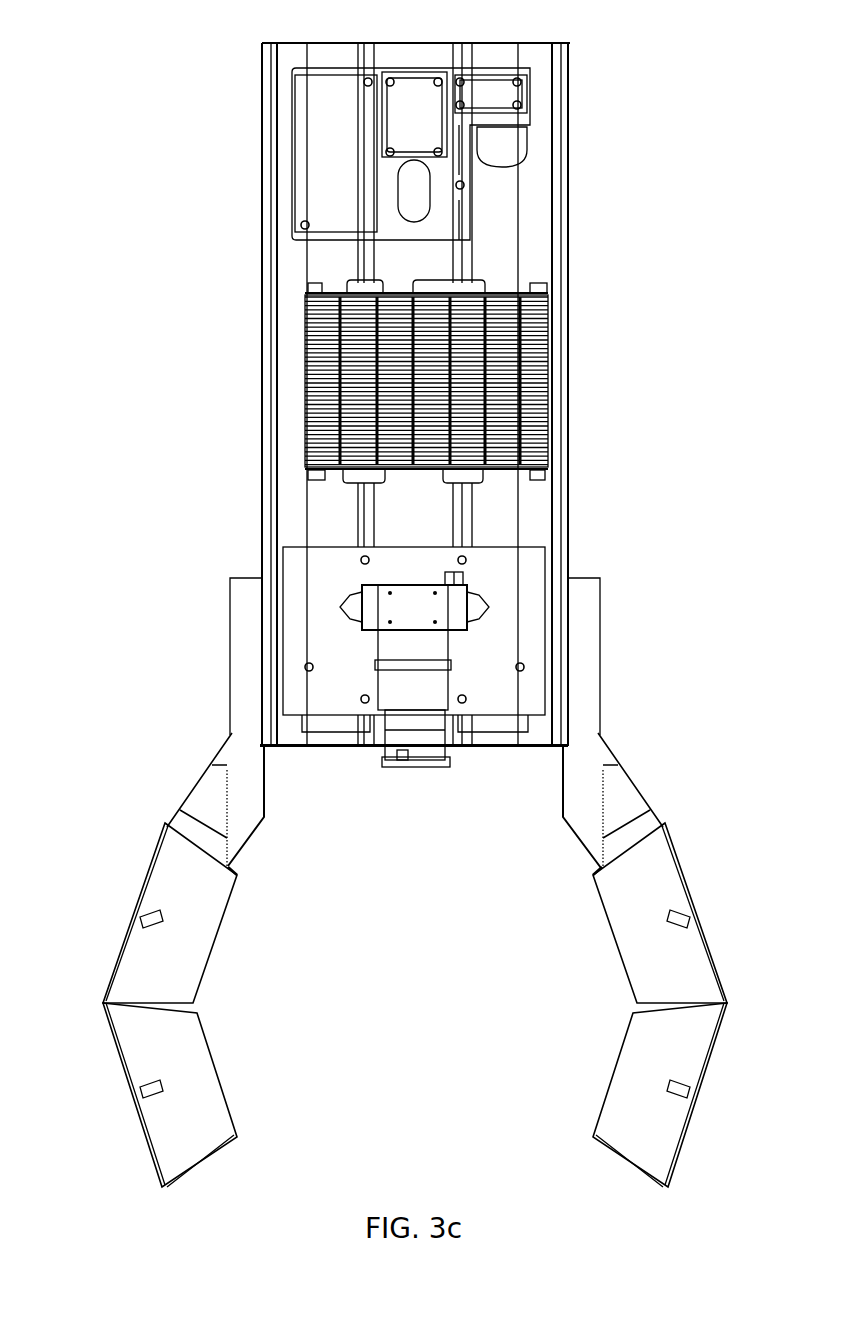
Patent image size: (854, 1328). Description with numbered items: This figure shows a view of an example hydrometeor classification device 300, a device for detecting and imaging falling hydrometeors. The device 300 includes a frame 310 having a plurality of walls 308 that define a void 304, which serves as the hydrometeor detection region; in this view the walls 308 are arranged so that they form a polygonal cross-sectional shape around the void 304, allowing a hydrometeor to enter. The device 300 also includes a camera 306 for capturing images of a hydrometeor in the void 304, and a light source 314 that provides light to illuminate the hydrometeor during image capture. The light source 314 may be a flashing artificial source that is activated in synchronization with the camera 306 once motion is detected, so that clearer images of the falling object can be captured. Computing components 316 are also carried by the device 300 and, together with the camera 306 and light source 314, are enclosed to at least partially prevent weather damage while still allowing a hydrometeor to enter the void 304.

The hydrometeor classification device 300 is at (142, 342).
The void 304 is at (433, 1010).
The camera 306 is at (415, 765).
The walls 308 is at (232, 878).
The frame 310 is at (236, 720).
The light source 314 is at (404, 720).
The computing components 316 is at (346, 82).